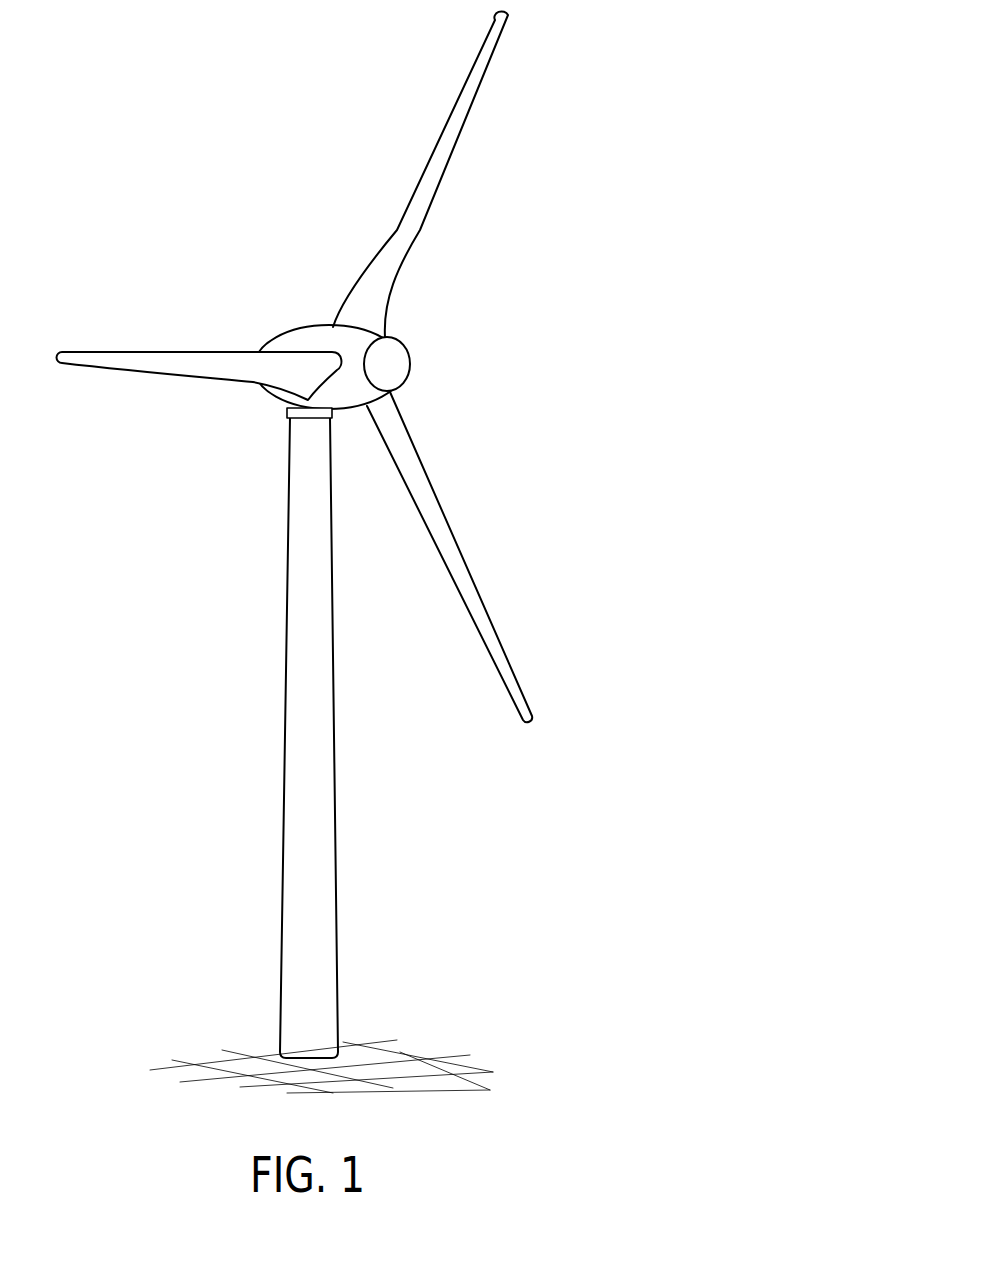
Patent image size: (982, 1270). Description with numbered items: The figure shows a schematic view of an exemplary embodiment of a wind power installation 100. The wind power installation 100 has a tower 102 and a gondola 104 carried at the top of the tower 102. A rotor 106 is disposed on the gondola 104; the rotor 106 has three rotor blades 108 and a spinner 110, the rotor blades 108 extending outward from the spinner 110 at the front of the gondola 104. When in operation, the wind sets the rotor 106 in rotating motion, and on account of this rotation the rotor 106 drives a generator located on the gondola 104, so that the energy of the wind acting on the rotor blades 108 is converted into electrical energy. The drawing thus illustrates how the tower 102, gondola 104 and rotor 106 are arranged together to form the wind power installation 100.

The wind power installation 100 is at (348, 552).
The tower 102 is at (330, 821).
The gondola 104 is at (295, 338).
The rotor 106 is at (348, 366).
The rotor blade 108 is at (120, 358).
The spinner 110 is at (395, 363).